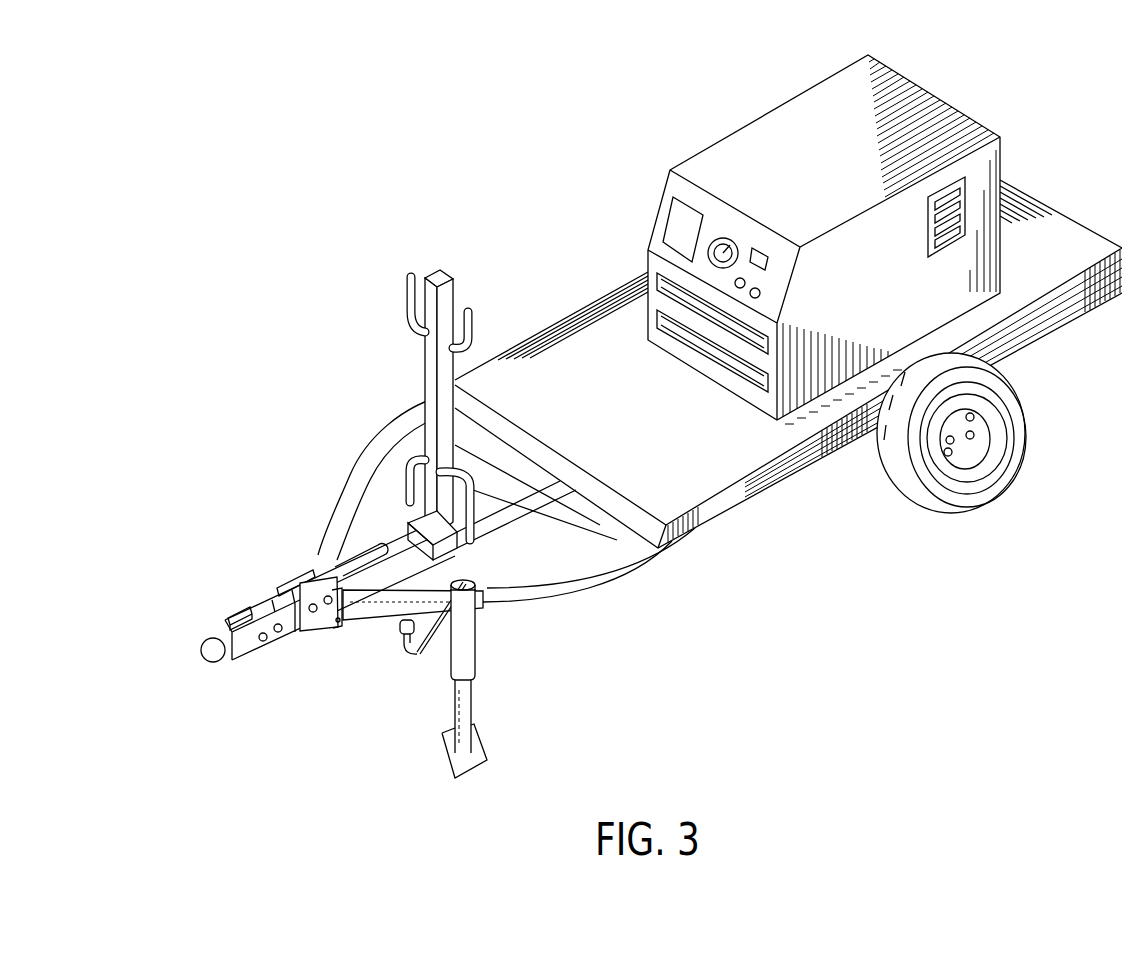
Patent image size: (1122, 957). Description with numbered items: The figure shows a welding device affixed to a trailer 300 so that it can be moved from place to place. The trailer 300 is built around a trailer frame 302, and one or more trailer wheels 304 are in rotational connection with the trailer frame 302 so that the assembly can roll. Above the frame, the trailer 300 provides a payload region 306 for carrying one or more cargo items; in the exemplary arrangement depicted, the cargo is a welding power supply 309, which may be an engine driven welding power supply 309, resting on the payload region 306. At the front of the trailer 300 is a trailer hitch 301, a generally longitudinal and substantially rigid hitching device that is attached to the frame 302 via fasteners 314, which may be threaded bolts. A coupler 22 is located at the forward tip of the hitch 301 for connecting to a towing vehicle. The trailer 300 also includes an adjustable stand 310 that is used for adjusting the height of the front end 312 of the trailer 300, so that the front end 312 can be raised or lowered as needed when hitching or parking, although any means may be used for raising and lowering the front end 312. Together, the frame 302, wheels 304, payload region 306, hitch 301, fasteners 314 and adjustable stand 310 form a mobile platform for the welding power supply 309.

The coupler 22 is at (222, 609).
The trailer 300 is at (355, 396).
The trailer hitch 301 is at (270, 562).
The trailer frame 302 is at (604, 592).
The trailer wheels 304 is at (1008, 435).
The payload region 306 is at (600, 322).
The welding power supply 309 is at (938, 123).
The adjustable stand 310 is at (463, 707).
The front end 312 is at (345, 700).
The fasteners 314 is at (341, 632).